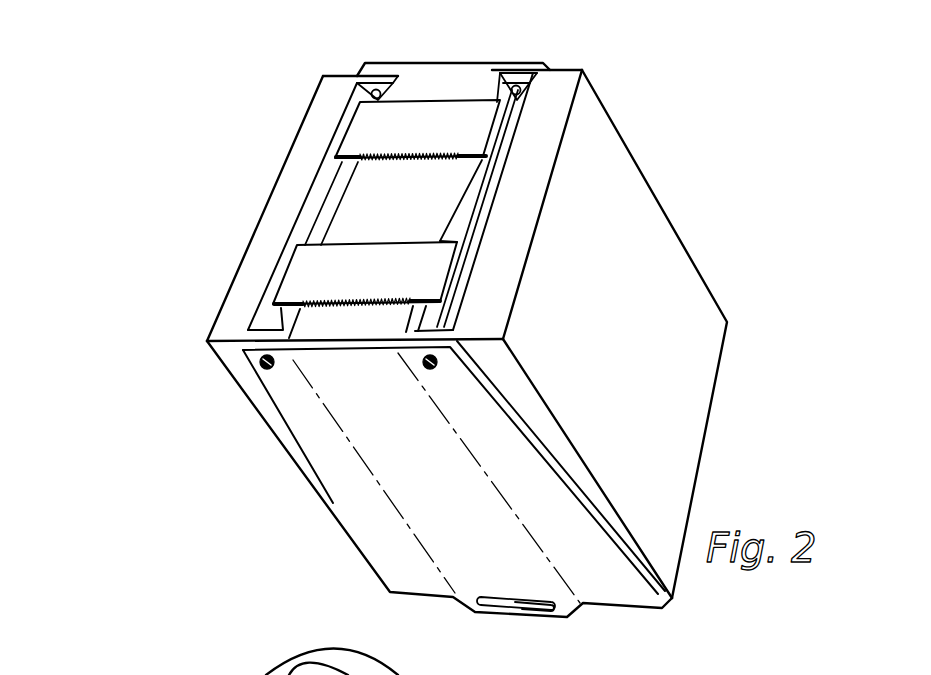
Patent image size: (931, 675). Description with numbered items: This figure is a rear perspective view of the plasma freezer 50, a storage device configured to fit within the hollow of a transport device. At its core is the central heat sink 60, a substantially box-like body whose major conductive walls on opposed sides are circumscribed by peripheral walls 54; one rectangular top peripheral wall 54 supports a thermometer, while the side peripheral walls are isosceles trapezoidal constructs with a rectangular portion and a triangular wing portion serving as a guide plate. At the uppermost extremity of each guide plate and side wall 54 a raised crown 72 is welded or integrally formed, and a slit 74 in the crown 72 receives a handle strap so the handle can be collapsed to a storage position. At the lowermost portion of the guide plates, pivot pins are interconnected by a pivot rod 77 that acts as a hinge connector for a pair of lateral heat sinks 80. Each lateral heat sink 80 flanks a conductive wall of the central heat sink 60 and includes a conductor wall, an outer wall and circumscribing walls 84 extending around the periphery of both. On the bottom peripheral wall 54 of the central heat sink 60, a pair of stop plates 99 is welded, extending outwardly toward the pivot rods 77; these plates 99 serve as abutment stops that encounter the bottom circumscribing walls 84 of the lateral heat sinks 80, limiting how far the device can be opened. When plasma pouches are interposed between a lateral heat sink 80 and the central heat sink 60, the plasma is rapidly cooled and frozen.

The freezer 50 is at (178, 282).
The peripheral wall 54 is at (390, 190).
The central heat sink 60 is at (490, 41).
The raised crown 72 is at (583, 608).
The slit 74 is at (528, 608).
The pivot rod 77 is at (473, 213).
The lateral heat sink 80 is at (733, 255).
The circumscribing walls 84 is at (488, 290).
The stop plates 99 is at (413, 128).